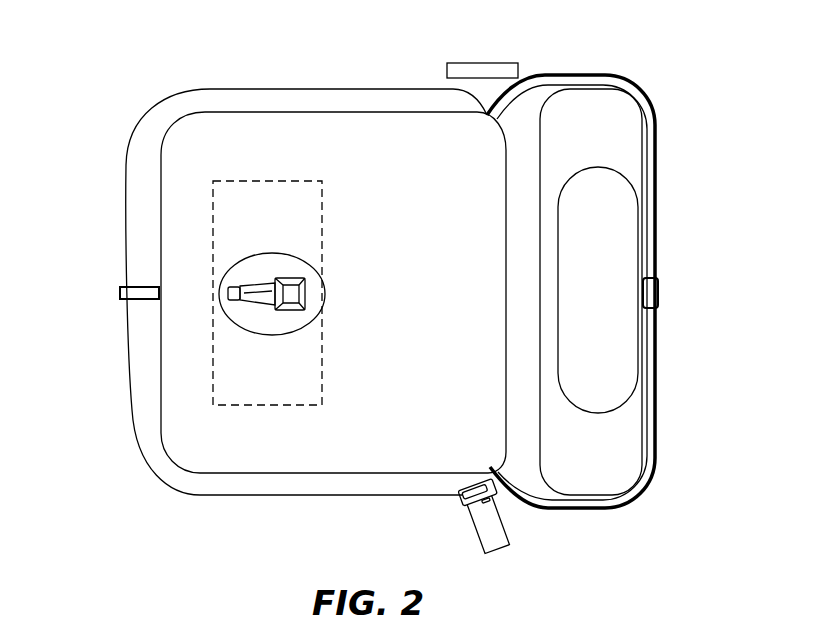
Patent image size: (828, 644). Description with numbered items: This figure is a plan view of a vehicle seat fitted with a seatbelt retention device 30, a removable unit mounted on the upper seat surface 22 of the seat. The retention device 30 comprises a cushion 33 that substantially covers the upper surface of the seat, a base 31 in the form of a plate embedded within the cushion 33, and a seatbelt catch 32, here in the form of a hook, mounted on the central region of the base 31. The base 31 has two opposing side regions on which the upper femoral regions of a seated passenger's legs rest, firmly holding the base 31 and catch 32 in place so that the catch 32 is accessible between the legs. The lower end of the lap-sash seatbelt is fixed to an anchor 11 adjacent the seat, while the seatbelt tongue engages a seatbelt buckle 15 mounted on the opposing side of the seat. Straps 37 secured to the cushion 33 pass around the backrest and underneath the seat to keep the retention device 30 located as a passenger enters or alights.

The anchor 11 is at (487, 70).
The seatbelt buckle 15 is at (468, 508).
The upper seat surface 22 is at (346, 89).
The seatbelt retention device 30 is at (187, 382).
The base 31 is at (233, 181).
The seatbelt catch 32 is at (232, 297).
The cushion 33 is at (363, 395).
The straps 37 is at (137, 291).